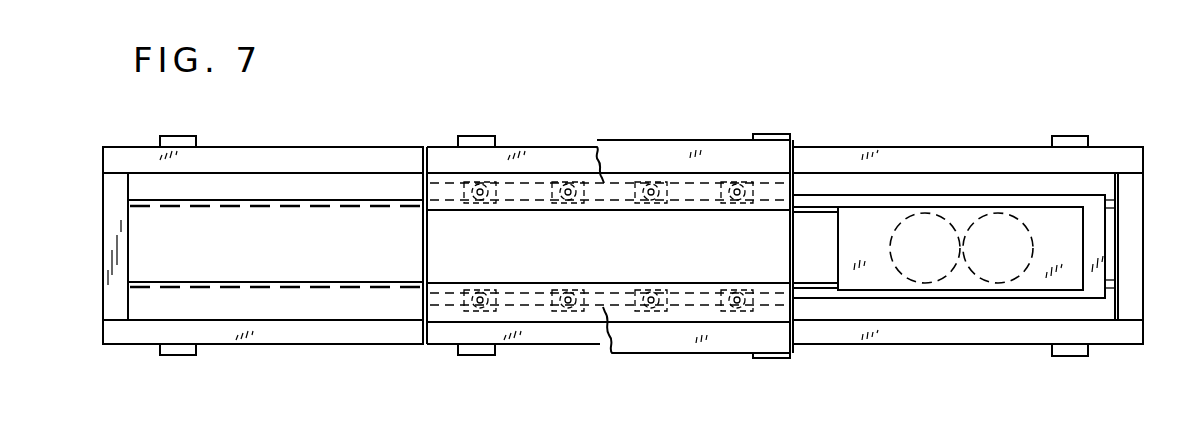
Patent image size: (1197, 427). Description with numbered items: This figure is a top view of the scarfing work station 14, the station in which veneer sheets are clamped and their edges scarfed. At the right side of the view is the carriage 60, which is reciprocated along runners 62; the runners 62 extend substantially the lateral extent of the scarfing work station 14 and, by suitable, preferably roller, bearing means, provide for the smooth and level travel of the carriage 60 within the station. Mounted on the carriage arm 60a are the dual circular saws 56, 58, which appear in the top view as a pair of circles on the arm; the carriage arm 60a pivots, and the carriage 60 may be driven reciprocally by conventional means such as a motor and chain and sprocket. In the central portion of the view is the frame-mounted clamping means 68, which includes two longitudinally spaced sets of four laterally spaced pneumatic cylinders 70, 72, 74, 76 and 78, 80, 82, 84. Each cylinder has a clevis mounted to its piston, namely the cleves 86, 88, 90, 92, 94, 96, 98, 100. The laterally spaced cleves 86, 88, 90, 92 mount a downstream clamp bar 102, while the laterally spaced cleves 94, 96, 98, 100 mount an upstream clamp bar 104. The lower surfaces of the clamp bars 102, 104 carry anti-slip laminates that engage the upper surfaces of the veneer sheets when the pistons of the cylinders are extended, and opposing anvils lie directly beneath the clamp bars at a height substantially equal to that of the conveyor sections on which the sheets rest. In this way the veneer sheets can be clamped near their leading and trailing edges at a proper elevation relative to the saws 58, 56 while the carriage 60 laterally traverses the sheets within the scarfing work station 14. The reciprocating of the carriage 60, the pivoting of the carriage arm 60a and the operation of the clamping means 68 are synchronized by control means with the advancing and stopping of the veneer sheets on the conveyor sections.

The scarfing work station 14 is at (872, 122).
The circular saw 56 is at (892, 237).
The circular saw 58 is at (1028, 228).
The carriage 60 is at (1116, 243).
The carriage arm 60a is at (1033, 291).
The runners 62 is at (1110, 203).
The clamping means 68 is at (419, 212).
The pneumatic cylinder 70 is at (485, 290).
The pneumatic cylinder 72 is at (578, 290).
The pneumatic cylinder 74 is at (664, 290).
The pneumatic cylinder 76 is at (750, 290).
The pneumatic cylinder 78 is at (491, 205).
The pneumatic cylinder 80 is at (578, 205).
The pneumatic cylinder 82 is at (660, 205).
The pneumatic cylinder 84 is at (748, 205).
The clevis 86 is at (475, 290).
The clevis 88 is at (562, 290).
The clevis 90 is at (650, 290).
The clevis 92 is at (735, 290).
The clevis 94 is at (477, 204).
The clevis 96 is at (564, 205).
The clevis 98 is at (646, 205).
The clevis 100 is at (734, 205).
The downstream clamp bar 102 is at (791, 279).
The upstream clamp bar 104 is at (791, 213).